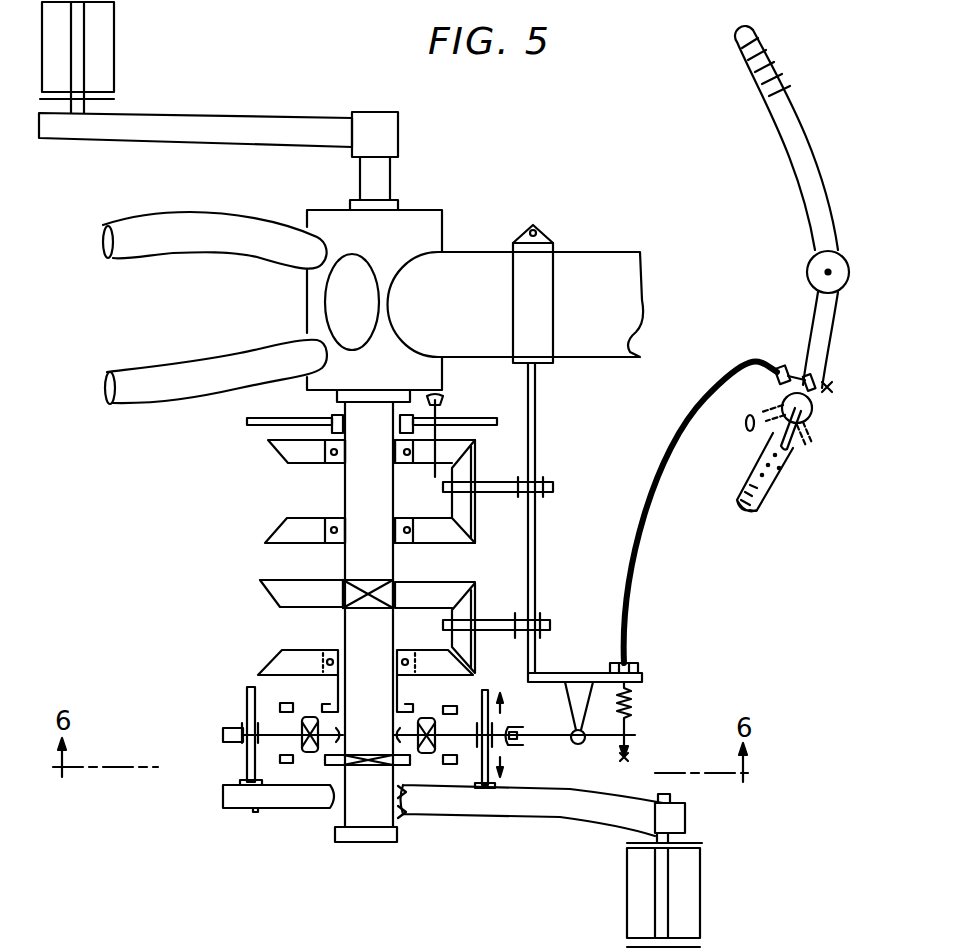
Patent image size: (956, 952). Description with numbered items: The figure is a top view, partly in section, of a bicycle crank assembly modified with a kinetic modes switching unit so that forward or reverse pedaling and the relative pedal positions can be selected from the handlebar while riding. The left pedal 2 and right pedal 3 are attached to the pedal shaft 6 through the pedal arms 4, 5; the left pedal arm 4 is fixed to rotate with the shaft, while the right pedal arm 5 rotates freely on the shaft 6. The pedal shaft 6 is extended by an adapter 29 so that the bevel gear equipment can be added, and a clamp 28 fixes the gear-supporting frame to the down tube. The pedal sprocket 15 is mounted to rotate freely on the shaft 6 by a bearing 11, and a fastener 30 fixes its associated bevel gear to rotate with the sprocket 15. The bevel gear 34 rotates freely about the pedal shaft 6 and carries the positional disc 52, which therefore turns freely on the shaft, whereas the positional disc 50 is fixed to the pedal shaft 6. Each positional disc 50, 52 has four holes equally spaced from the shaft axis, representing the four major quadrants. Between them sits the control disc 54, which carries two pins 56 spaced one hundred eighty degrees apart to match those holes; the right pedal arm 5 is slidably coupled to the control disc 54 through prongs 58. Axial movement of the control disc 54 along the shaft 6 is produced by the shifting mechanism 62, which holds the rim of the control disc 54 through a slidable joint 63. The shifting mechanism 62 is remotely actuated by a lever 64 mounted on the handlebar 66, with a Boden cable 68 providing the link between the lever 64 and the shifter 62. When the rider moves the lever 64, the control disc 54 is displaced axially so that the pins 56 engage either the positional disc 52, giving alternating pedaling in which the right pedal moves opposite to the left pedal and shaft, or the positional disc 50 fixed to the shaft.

The left pedal 2 is at (114, 30).
The pedal arm 4 is at (263, 114).
The pedal shaft 6 is at (392, 180).
The clamp 28 is at (562, 224).
The adapter 29 is at (345, 488).
The pedal sprocket 15 is at (248, 424).
The bearing 11 is at (332, 430).
The fastener 30 is at (443, 400).
The bevel gear 34 is at (270, 662).
The positional disc 52 is at (283, 705).
The control disc 54 is at (223, 738).
The prongs 58 is at (247, 757).
The positional disc 50 is at (283, 765).
The pins 56 is at (311, 753).
The slidable joint 63 is at (535, 748).
The shifting mechanism 62 is at (648, 702).
The pedal arm 5 is at (560, 818).
The right pedal 3 is at (700, 870).
The handlebar 66 is at (806, 112).
The lever 64 is at (828, 430).
The Boden cable 68 is at (643, 530).